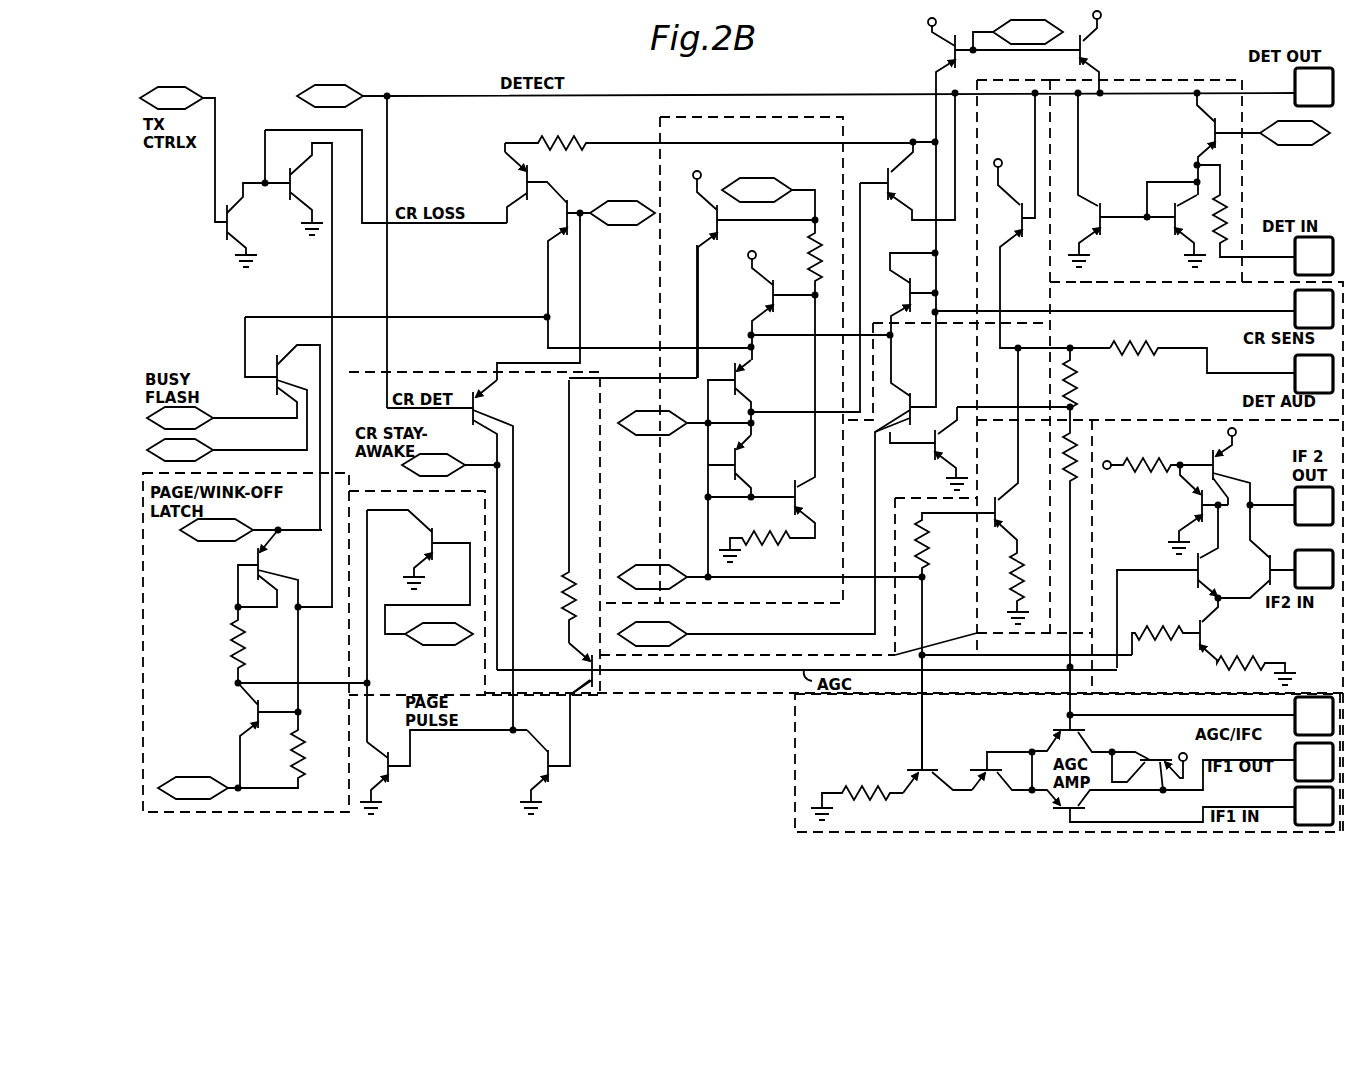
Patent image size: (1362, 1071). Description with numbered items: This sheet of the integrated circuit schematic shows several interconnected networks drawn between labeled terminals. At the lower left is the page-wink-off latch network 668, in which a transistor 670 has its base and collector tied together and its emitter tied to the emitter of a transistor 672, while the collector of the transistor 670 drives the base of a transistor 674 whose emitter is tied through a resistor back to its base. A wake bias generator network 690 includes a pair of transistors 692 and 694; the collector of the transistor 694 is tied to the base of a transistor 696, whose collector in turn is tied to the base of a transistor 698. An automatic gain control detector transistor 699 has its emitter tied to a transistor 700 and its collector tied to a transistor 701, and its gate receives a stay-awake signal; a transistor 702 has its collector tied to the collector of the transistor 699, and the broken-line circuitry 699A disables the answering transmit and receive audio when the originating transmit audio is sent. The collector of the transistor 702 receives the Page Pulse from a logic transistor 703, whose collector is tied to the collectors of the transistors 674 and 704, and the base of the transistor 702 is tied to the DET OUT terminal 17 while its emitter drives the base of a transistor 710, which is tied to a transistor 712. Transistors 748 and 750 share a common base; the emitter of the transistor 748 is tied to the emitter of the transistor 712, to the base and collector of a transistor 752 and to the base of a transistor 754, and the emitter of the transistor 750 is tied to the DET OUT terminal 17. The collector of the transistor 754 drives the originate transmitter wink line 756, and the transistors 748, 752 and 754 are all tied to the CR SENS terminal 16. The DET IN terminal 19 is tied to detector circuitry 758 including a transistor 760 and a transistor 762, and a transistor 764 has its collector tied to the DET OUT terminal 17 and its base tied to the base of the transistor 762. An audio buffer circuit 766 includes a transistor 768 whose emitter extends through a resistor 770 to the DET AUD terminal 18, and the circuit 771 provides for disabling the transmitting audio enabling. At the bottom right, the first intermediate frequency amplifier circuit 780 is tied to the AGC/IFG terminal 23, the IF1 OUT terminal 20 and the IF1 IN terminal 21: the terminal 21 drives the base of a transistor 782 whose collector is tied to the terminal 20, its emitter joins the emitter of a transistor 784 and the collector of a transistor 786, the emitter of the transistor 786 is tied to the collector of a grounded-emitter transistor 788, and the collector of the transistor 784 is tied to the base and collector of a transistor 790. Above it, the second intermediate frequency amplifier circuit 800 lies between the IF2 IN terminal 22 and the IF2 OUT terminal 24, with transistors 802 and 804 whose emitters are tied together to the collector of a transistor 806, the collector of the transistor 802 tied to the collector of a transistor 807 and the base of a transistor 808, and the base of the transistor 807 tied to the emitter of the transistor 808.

The page-wink-off latch network 668 is at (274, 473).
The transistor 670 is at (256, 603).
The transistor 672 is at (233, 423).
The transistor 674 is at (250, 726).
The wake bias generator network 690 is at (658, 502).
The transistor 692 is at (738, 388).
The transistor 694 is at (738, 472).
The transistor 696 is at (778, 487).
The transistor 698 is at (764, 298).
The transistor 699 is at (594, 671).
The disabling circuitry 699A is at (453, 372).
The transistor 700 is at (713, 222).
The transistor 701 is at (542, 766).
The transistor 702 is at (483, 471).
The transistor 703 is at (443, 771).
The transistor 704 is at (425, 546).
The transistor 710 is at (562, 218).
The transistor 712 is at (519, 187).
The transistor 748 is at (940, 52).
The transistor 750 is at (876, 175).
The transistor 752 is at (908, 294).
The transistor 754 is at (914, 400).
The originate transmitter wink line 756 is at (791, 639).
The detector circuitry 758 is at (1150, 82).
The transistor 760 is at (1208, 139).
The transistor 762 is at (1168, 231).
The transistor 764 is at (1101, 179).
The audio buffer circuit 766 is at (1028, 82).
The transistor 768 is at (1046, 219).
The resistor 770 is at (1202, 345).
The circuit 771 is at (1092, 282).
The first intermediate frequency amplifier circuit 780 is at (786, 780).
The transistor 782 is at (1060, 810).
The transistor 784 is at (1048, 730).
The transistor 786 is at (1001, 784).
The transistor 788 is at (891, 737).
The transistor 790 is at (1154, 788).
The second intermediate frequency amplifier circuit 800 is at (1114, 419).
The transistor 802 is at (1191, 582).
The transistor 804 is at (1264, 570).
The transistor 806 is at (1214, 641).
The transistor 807 is at (1207, 453).
The transistor 808 is at (1184, 509).
The CR SENS terminal 16 is at (1134, 309).
The detect out (DET OUT) terminal 17 is at (1314, 87).
The DET AUD terminal 18 is at (1314, 374).
The detect in (DET IN) terminal 19 is at (1314, 256).
The intermediate frequency one output (IF1 OUT) terminal 20 is at (1314, 762).
The intermediate frequency one input (IF1 IN) terminal 21 is at (1314, 806).
The IF2 IN terminal 22 is at (1314, 569).
The automatic gain control (AGC/IFG) terminal 23 is at (1314, 716).
The IF2 OUT terminal 24 is at (1314, 506).